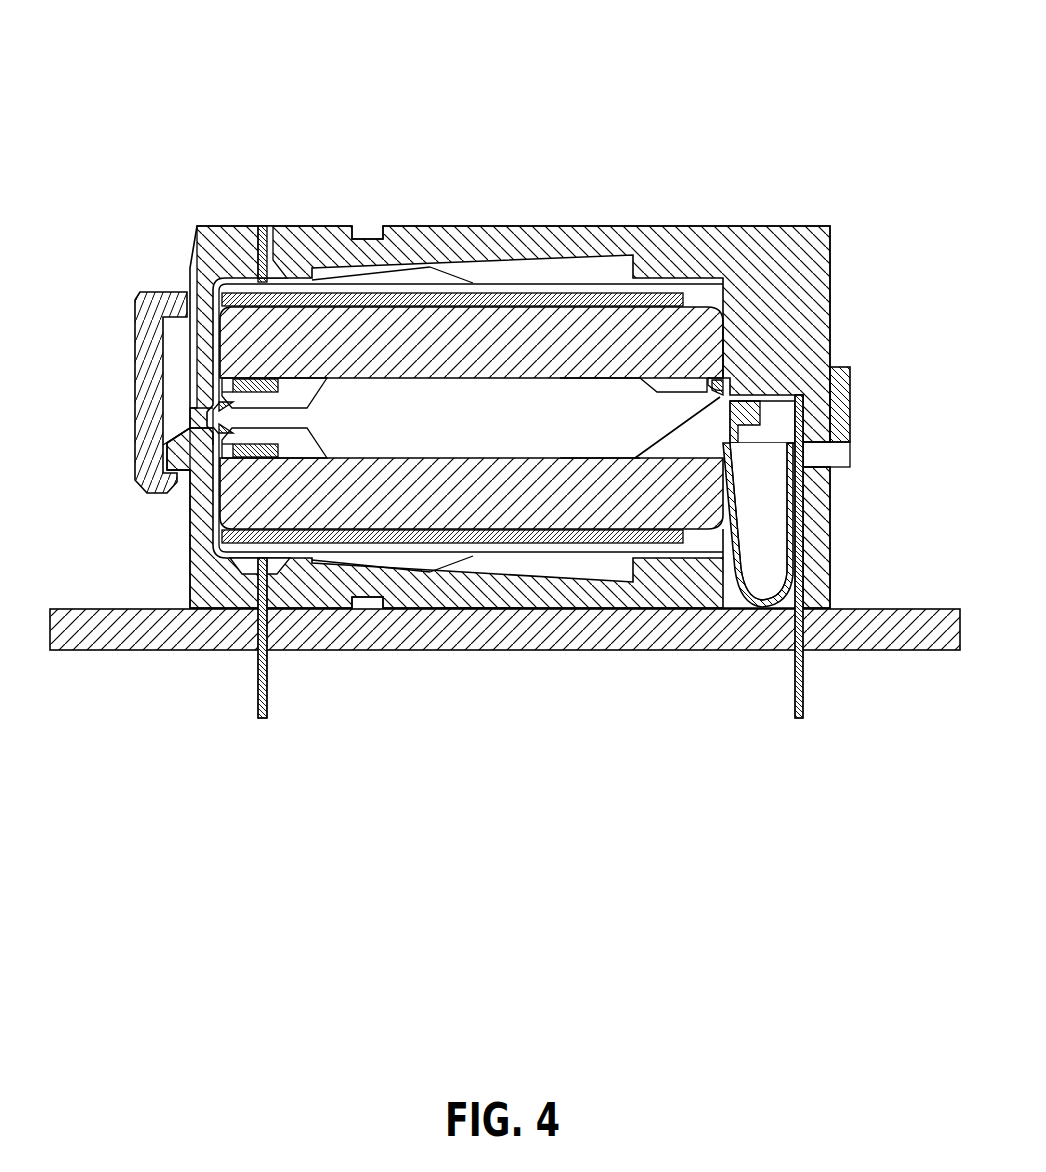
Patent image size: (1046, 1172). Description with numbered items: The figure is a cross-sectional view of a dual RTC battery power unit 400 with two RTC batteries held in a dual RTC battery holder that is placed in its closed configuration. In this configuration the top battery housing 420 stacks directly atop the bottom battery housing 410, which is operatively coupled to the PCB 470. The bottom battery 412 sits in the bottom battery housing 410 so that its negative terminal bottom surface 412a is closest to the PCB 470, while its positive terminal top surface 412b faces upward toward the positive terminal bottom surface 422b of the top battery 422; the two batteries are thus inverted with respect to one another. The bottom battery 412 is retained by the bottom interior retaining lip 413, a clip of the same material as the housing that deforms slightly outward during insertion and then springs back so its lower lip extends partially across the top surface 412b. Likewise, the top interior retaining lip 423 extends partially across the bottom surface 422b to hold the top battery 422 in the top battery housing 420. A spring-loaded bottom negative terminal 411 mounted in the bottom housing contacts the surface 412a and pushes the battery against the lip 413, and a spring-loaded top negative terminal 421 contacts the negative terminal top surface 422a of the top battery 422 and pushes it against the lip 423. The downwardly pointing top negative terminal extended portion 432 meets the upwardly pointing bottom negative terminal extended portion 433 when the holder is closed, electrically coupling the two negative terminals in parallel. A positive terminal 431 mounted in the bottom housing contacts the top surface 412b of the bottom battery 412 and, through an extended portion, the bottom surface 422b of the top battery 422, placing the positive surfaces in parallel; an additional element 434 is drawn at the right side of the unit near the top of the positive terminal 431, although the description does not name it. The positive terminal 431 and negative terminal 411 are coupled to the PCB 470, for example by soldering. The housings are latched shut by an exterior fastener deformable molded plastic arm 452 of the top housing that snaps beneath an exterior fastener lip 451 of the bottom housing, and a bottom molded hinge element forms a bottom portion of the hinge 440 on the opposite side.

The dual RTC battery power unit 400 is at (862, 100).
The bottom battery housing 410 is at (480, 612).
The bottom negative terminal 411 is at (262, 720).
The bottom battery 412 is at (692, 533).
The negative terminal bottom surface 412a is at (568, 538).
The positive terminal top surface 412b is at (586, 457).
The bottom interior retaining lip 413 is at (282, 448).
The top battery housing 420 is at (408, 224).
The top negative terminal 421 is at (262, 236).
The top battery 422 is at (690, 302).
The negative terminal top surface 422a is at (568, 297).
The positive terminal bottom surface 422b is at (586, 380).
The top interior retaining lip 423 is at (282, 388).
The positive terminal 431 is at (797, 720).
The top negative terminal extended portion 432 is at (214, 414).
The bottom negative terminal extended portion 433 is at (214, 440).
The shell lip 434 is at (723, 382).
The hinge 440 is at (852, 403).
The exterior fastener lip 451 is at (163, 447).
The exterior fastener deformable molded plastic arm 452 is at (137, 396).
The PCB 470 is at (360, 652).